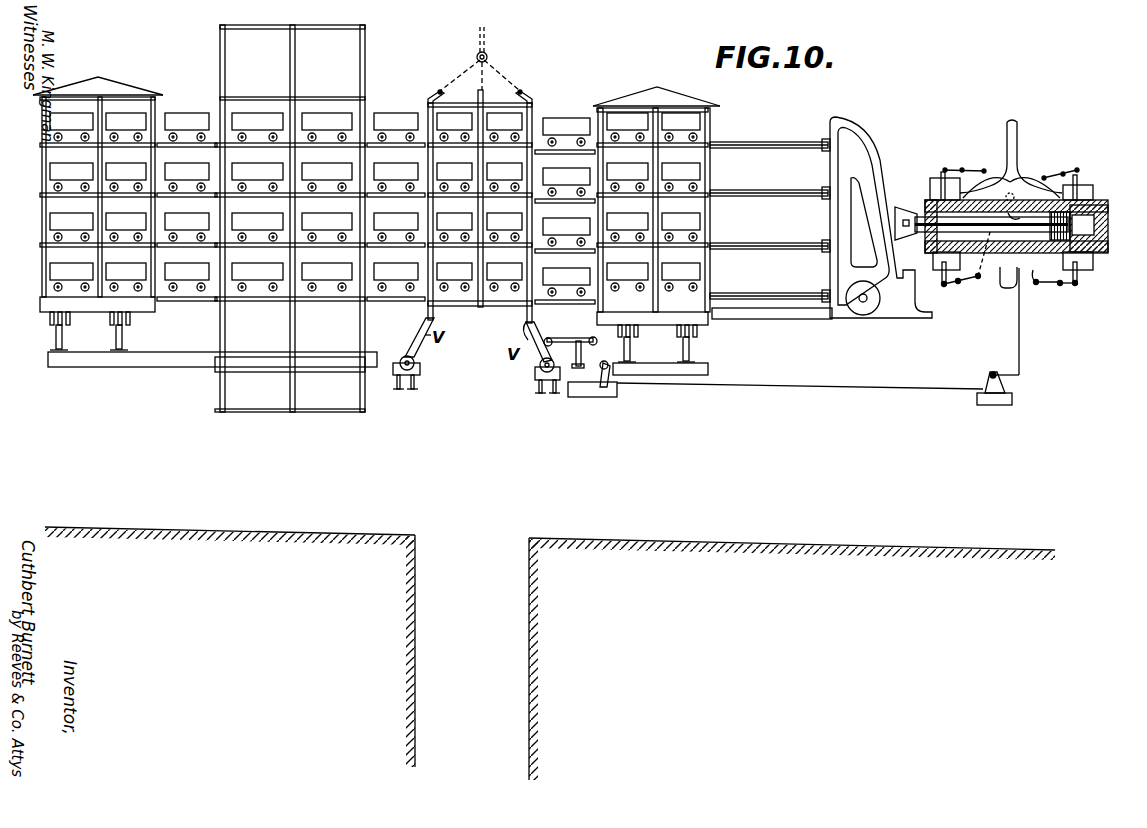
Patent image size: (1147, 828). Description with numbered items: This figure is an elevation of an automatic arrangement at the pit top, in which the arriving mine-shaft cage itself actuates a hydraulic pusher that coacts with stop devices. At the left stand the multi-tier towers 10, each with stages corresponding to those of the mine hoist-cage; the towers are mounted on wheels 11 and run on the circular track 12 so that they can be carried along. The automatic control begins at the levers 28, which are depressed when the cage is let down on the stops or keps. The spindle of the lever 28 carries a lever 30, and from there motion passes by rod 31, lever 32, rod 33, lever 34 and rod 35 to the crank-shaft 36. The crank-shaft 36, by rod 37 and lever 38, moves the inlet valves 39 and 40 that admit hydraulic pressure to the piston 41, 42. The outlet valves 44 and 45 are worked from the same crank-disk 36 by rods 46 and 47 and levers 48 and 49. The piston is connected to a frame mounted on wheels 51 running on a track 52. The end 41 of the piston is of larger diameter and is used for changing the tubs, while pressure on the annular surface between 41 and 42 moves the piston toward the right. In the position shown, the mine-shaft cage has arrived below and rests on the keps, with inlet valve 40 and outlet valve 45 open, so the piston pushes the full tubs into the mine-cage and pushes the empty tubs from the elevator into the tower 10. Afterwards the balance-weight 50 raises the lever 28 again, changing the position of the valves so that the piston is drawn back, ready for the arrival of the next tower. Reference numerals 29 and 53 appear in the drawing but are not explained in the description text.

The tower 10 is at (140, 95).
The wheels 11 is at (124, 340).
The circular track 12 is at (62, 343).
The lever 28 is at (524, 330).
The link 29 is at (546, 345).
The lever 30 is at (565, 338).
The rod 31 is at (557, 369).
The lever 32 is at (602, 370).
The rod 33 is at (752, 384).
The lever 34 is at (990, 374).
The rod 35 is at (1019, 292).
The crank-shaft 36 is at (1020, 180).
The rod 37 is at (992, 182).
The lever 38 is at (983, 170).
The inlet valve 39 is at (935, 183).
The inlet valve 40 is at (1082, 187).
The piston end of larger diameter 41 is at (1079, 228).
The piston 42 is at (938, 208).
The outlet valve 44 is at (1077, 284).
The outlet valve 45 is at (962, 283).
The rod 46 is at (1040, 284).
The rod 47 is at (989, 258).
The lever 48 is at (1061, 286).
The lever 49 is at (946, 285).
The balance-weight 50 is at (871, 163).
The wheels 51 is at (861, 302).
The track 52 is at (782, 318).
The pivot 53 is at (593, 340).